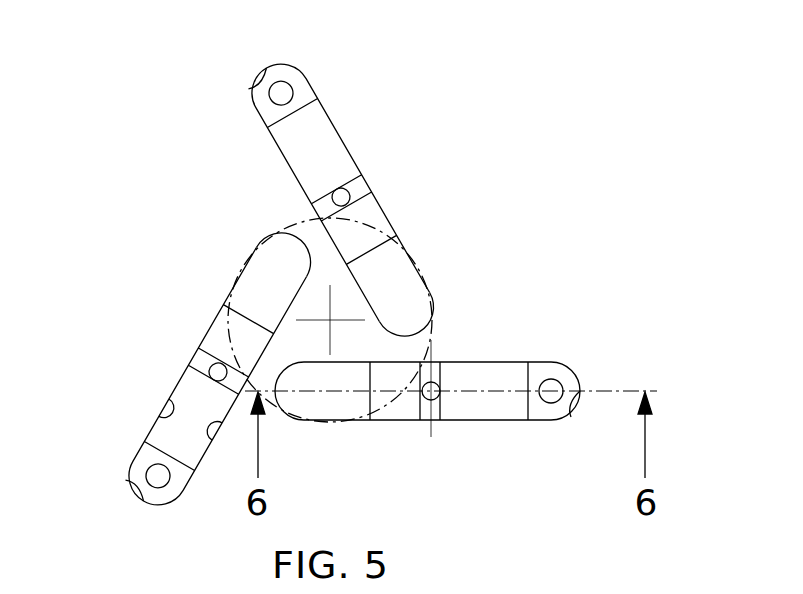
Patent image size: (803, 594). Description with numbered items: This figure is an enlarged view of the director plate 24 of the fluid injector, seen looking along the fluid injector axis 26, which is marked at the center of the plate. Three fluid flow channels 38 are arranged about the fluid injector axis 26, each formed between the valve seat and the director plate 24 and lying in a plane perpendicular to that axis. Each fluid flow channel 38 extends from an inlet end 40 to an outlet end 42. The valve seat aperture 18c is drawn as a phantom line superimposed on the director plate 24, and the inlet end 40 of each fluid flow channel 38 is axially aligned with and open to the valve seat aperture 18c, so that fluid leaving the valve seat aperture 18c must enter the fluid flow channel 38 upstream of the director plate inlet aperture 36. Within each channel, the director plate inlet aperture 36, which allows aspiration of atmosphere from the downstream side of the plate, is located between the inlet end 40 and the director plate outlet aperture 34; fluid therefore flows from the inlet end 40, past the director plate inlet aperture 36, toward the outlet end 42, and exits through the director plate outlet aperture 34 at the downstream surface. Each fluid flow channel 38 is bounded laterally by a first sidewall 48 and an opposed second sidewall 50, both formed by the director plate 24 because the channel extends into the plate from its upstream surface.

The valve seat aperture 18c is at (287, 225).
The director plate 24 is at (655, 95).
The fluid injector axis 26 is at (328, 318).
The director plate outlet aperture 34 is at (284, 90).
The director plate inlet aperture 36 is at (344, 196).
The fluid flow channel 38 is at (347, 124).
The inlet end 40 is at (290, 241).
The outlet end 42 is at (251, 94).
The first sidewall 48 is at (160, 411).
The second sidewall 50 is at (214, 444).